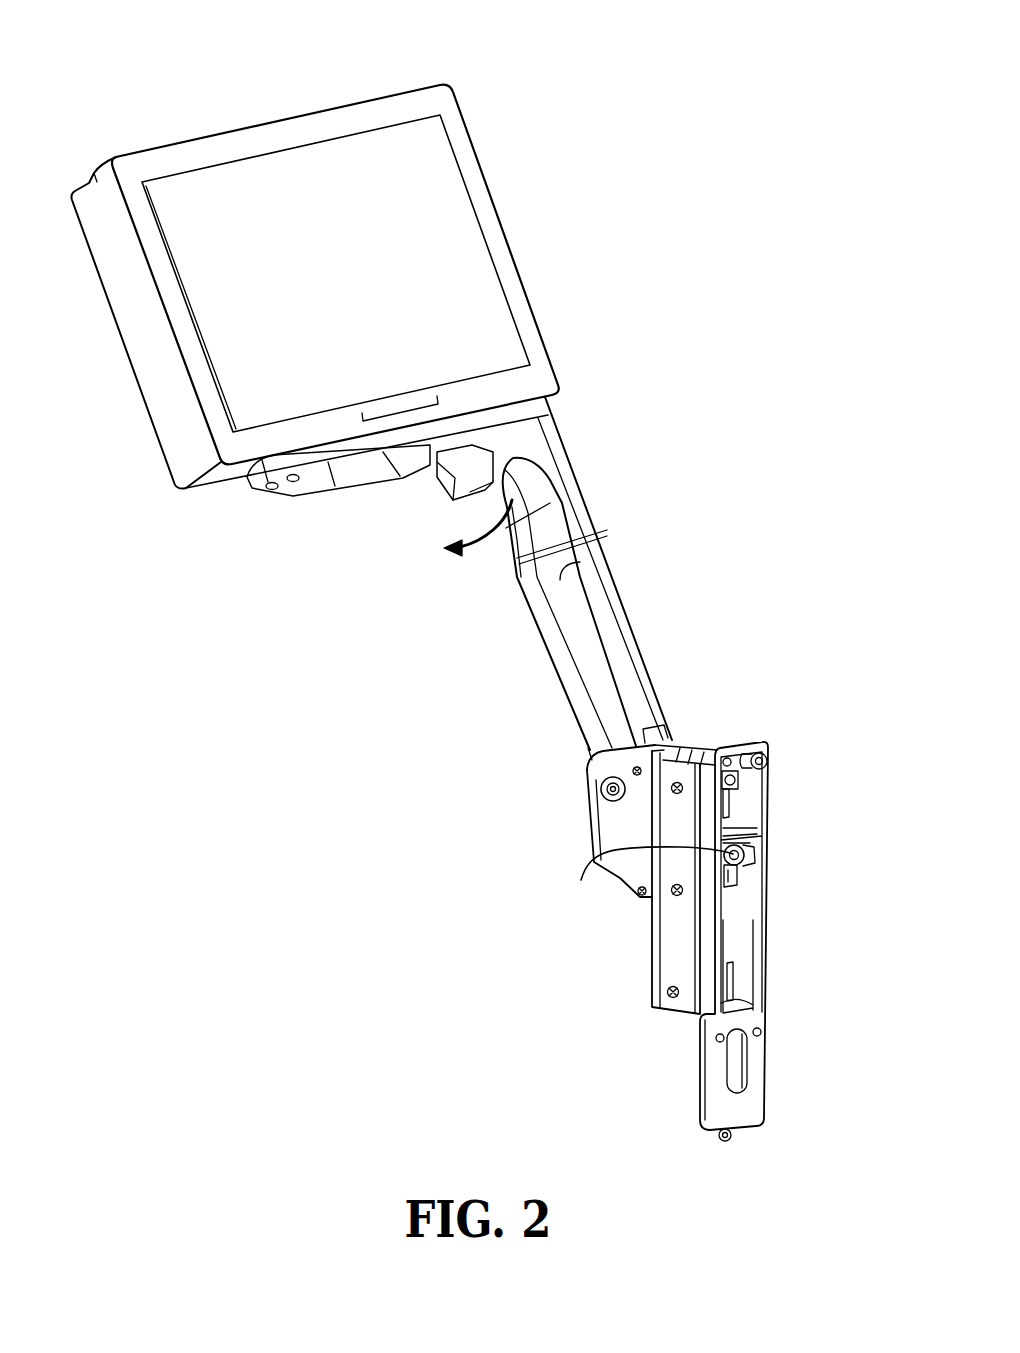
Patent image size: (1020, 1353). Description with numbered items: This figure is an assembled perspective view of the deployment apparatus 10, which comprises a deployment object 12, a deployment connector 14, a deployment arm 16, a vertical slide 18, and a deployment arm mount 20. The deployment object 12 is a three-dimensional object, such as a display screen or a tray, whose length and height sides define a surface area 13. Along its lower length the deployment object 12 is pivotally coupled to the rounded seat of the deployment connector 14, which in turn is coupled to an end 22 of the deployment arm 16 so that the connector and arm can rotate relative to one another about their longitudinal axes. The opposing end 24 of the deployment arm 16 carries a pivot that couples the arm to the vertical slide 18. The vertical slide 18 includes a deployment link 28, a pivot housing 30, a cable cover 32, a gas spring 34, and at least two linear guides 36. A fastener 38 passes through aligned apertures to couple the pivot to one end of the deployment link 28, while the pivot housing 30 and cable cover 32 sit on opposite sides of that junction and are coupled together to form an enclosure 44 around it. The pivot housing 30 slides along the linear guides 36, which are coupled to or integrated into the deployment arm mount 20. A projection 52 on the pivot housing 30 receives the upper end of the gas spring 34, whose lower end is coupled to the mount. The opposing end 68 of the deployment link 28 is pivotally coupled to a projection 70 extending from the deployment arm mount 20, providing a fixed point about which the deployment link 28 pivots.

The deployment apparatus 10 is at (751, 219).
The deployment object 12 is at (173, 142).
The surface area 13 is at (357, 168).
The deployment connector 14 is at (535, 462).
The deployment arm 16 is at (608, 607).
The vertical slide 18 is at (787, 690).
The deployment arm mount 20 is at (763, 958).
The end of the deployment arm 22 is at (533, 563).
The opposing end of the deployment arm 24 is at (580, 735).
The deployment link 28 is at (750, 843).
The pivot housing 30 is at (600, 815).
The cable cover 32 is at (700, 749).
The gas spring 34 is at (757, 1005).
The linear guides 36 is at (665, 945).
The fastener 38 is at (590, 800).
The enclosure 44 is at (600, 788).
The projection 52 is at (727, 803).
The opposing end of the deployment link 68 is at (648, 879).
The projection 70 is at (752, 860).